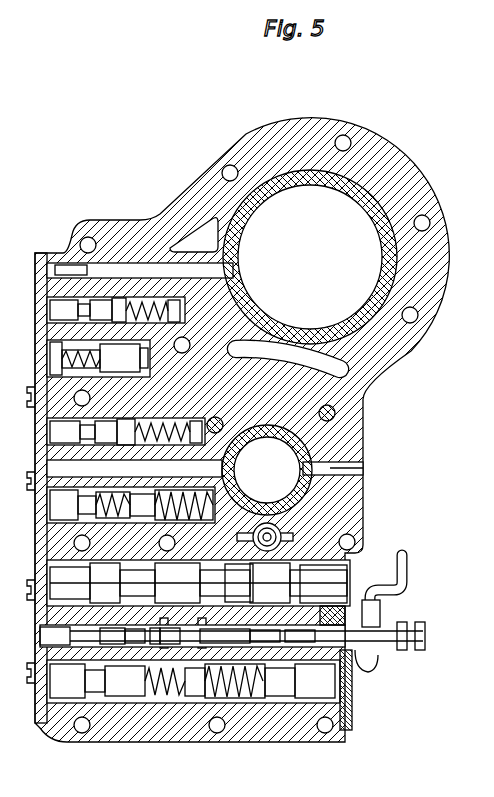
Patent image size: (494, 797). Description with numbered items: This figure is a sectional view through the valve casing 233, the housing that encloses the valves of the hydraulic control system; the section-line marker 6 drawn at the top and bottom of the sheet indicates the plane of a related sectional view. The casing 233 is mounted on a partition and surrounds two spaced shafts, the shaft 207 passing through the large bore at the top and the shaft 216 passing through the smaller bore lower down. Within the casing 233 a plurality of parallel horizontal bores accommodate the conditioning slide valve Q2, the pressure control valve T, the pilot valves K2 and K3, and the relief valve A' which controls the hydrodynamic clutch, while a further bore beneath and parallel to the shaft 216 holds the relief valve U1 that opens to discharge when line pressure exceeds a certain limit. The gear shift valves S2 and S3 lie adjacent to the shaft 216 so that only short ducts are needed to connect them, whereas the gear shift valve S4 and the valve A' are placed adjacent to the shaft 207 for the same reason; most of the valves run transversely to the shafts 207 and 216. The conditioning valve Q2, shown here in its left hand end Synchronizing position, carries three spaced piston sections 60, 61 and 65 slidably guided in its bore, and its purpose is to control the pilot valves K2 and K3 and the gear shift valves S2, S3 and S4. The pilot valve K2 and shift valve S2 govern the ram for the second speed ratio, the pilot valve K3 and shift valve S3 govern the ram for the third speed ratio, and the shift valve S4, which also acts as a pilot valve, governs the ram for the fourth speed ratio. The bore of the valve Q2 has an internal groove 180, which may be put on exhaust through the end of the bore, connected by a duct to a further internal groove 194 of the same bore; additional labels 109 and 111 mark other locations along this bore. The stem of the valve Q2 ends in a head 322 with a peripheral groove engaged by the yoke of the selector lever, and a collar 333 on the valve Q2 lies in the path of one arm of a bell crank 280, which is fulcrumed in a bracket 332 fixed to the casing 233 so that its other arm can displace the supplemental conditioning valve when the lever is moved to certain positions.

The shaft 207 is at (260, 192).
The section line 6 is at (311, 130).
The relief valve A' is at (96, 317).
The gear shift valve S4 is at (90, 352).
The gear shift valve S3 is at (60, 427).
The gear shift valve S2 is at (60, 503).
The pressure control valve T is at (90, 575).
The piston section 60 is at (97, 640).
The conditioning slide valve Q2 is at (53, 630).
The shaft 216 is at (313, 447).
The casing 233 is at (355, 496).
The relief valve U1 is at (280, 533).
The collar 333 is at (322, 622).
The bell crank 280 is at (392, 593).
The head 322 is at (410, 650).
The bracket 332 is at (353, 697).
The piston section 65 is at (227, 608).
The internal groove 194 is at (164, 622).
The valve collar 111 is at (203, 618).
The rod section 109 is at (265, 637).
The internal groove 180 is at (300, 637).
The piston section 61 is at (130, 633).
The pilot valve K2 is at (163, 683).
The pilot valve K3 is at (262, 720).